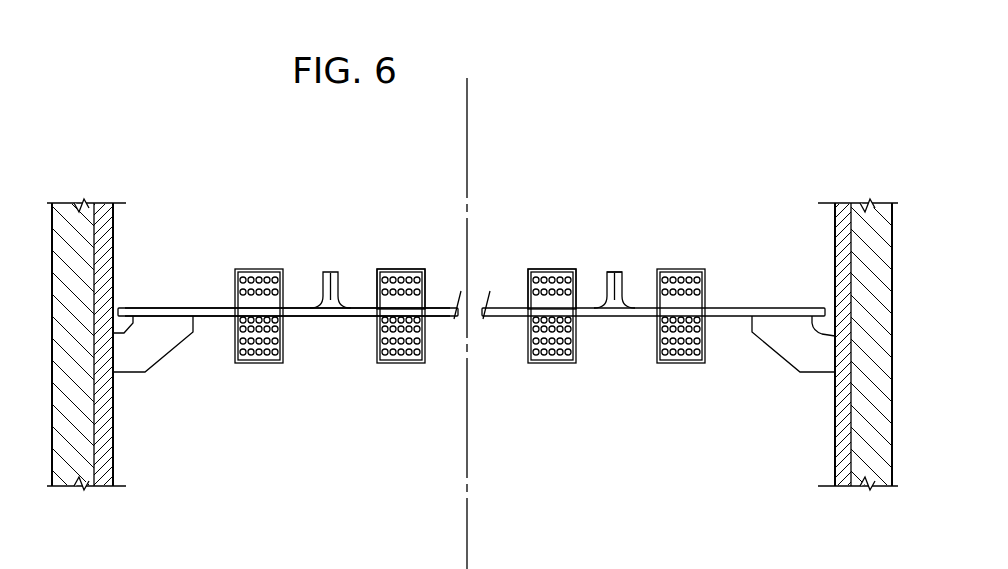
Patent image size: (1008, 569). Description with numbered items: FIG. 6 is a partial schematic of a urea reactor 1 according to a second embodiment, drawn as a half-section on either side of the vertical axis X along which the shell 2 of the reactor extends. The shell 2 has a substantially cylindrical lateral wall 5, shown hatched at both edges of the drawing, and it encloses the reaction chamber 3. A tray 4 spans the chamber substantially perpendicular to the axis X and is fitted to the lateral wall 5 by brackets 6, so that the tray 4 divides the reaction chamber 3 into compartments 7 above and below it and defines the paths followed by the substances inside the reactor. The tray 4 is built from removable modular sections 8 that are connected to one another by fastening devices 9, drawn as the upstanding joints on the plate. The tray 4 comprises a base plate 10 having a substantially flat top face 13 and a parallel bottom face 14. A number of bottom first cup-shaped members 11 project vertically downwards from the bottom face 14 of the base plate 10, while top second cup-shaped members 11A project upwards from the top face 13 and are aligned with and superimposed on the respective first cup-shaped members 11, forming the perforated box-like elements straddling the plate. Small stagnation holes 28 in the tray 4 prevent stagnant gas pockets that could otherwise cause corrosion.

The urea reactor 1 is at (217, 158).
The shell 2 is at (835, 243).
The reaction chamber 3 is at (736, 255).
The tray 4 is at (722, 320).
The lateral wall 5 is at (84, 488).
The bracket 6 is at (138, 357).
The compartment 7 is at (184, 254).
The removable modular section 8 is at (623, 325).
The fastening device 9 is at (603, 280).
The base plate 10 is at (346, 320).
The first cup-shaped member 11 is at (433, 345).
The second cup-shaped member 11A is at (428, 282).
The top face 13 is at (208, 300).
The bottom face 14 is at (210, 325).
The stagnation hole 28 is at (496, 306).
The vertical axis X is at (468, 120).